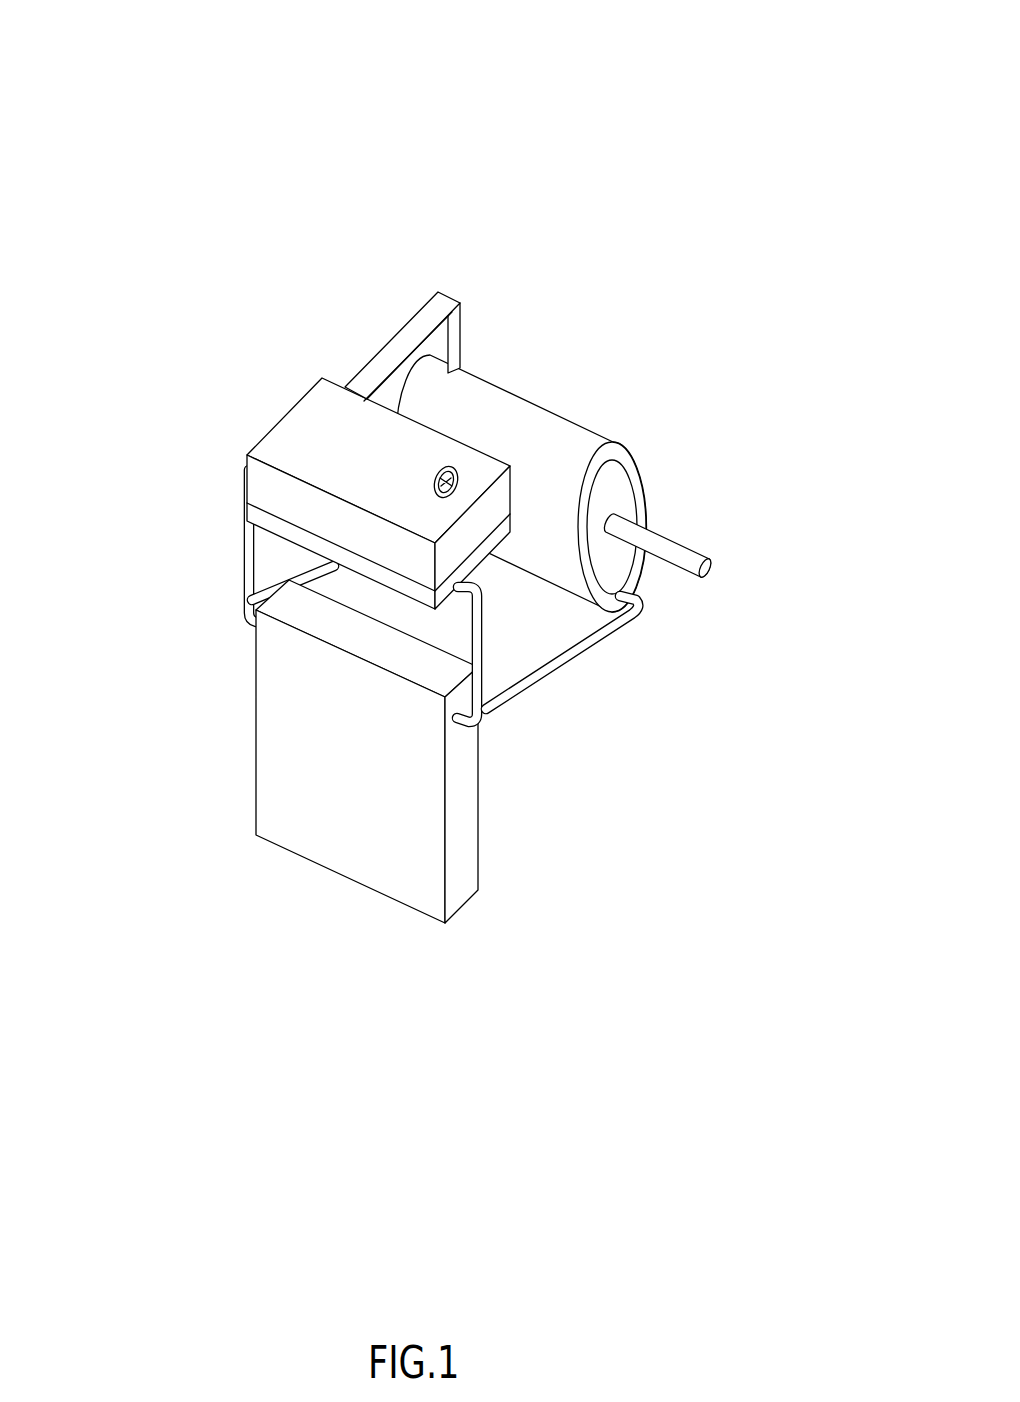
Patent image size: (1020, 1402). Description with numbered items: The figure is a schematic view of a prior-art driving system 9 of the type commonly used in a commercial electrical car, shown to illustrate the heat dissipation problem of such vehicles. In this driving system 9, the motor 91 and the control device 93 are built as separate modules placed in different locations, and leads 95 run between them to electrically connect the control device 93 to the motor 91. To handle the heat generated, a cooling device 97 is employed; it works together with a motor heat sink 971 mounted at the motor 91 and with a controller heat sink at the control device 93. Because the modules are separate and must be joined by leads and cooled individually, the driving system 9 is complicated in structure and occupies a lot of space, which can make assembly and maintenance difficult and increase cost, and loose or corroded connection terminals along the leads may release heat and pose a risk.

The driving system 9 is at (240, 258).
The motor 91 is at (637, 473).
The control device 93 is at (282, 418).
The leads 95 is at (456, 293).
The cooling device 97 is at (482, 786).
The motor heat sink 971 is at (547, 403).